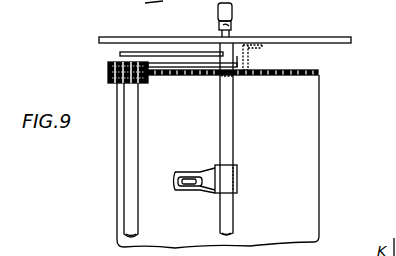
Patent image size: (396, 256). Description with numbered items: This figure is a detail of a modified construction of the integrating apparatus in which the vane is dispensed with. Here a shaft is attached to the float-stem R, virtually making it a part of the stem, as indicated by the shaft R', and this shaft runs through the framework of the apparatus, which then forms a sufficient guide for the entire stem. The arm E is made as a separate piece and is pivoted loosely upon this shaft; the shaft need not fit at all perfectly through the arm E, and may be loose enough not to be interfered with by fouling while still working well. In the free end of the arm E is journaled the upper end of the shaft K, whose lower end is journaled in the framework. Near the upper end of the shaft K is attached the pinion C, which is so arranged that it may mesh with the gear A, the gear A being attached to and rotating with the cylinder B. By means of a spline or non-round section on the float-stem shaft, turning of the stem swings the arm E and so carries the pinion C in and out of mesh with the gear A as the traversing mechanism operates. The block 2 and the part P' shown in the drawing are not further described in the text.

The supporting bar 2 is at (225, 25).
The arm E is at (165, 54).
The pinion C is at (108, 76).
The gear A is at (319, 72).
The shaft R' is at (237, 119).
The cylinder B is at (218, 161).
The shaft K is at (139, 160).
The float-stem R is at (206, 172).
The pawl P' is at (182, 204).